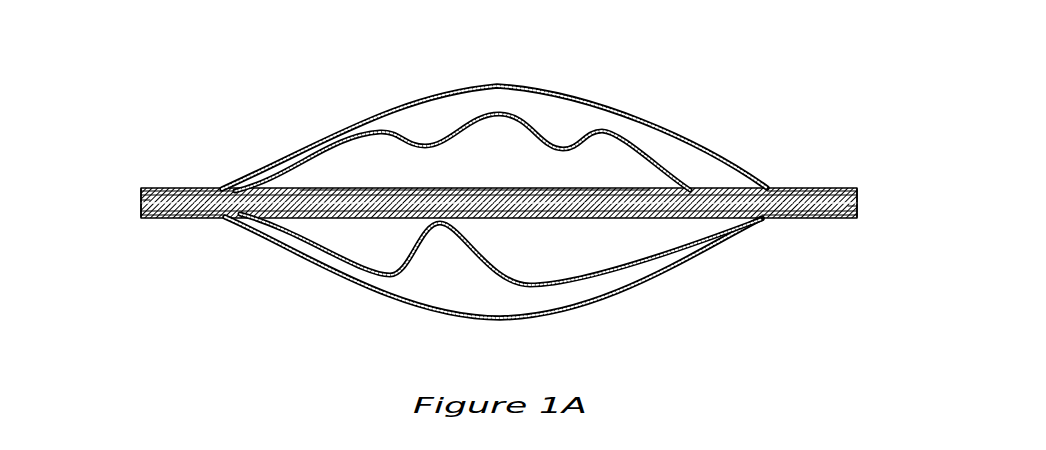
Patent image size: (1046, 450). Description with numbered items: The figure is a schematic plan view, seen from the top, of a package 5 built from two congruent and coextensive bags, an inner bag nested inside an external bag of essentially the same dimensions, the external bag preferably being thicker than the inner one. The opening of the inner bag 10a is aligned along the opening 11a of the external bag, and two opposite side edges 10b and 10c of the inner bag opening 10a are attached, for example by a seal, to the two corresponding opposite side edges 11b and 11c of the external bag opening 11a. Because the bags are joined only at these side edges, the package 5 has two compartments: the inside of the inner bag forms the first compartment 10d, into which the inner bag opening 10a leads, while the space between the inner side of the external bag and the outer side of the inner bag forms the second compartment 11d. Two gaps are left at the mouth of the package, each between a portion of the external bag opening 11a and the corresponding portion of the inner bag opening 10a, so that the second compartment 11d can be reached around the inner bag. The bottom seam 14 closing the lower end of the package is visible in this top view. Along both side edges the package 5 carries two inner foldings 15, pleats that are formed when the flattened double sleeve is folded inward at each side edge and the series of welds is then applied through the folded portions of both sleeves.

The package 5 is at (508, 198).
The opening of the inner bag 10a is at (578, 146).
The side edge of the inner bag opening 10b is at (153, 188).
The side edge of the inner bag opening 10c is at (848, 219).
The first compartment 10d is at (475, 167).
The opening of the external bag 11a is at (680, 130).
The side edge of the external bag opening 11b is at (131, 194).
The side edge of the external bag opening 11c is at (858, 194).
The second compartment 11d is at (501, 253).
The bottom seam 14 is at (569, 224).
The inner foldings 15 is at (140, 226).